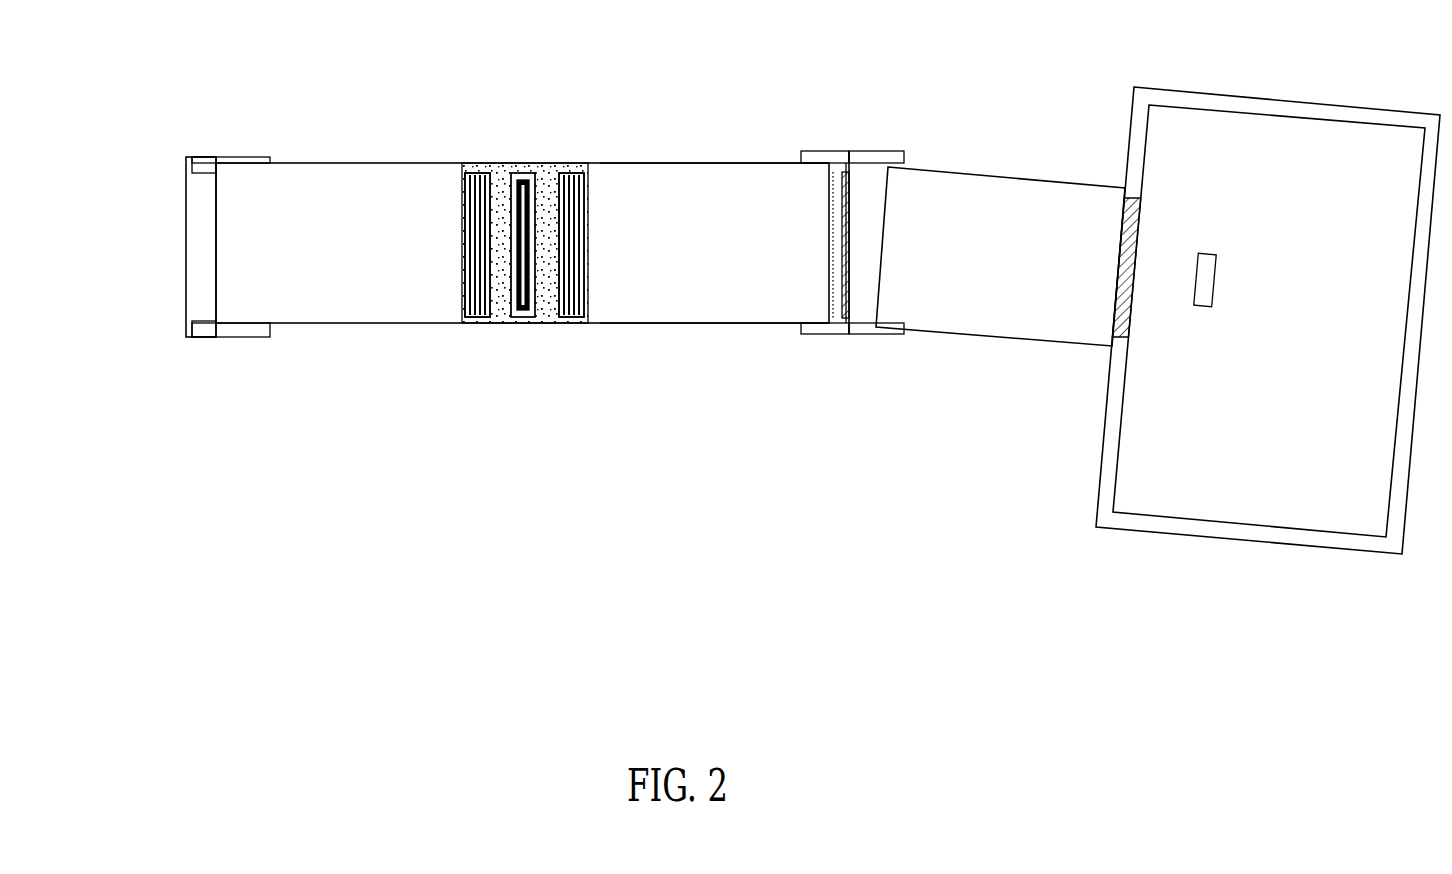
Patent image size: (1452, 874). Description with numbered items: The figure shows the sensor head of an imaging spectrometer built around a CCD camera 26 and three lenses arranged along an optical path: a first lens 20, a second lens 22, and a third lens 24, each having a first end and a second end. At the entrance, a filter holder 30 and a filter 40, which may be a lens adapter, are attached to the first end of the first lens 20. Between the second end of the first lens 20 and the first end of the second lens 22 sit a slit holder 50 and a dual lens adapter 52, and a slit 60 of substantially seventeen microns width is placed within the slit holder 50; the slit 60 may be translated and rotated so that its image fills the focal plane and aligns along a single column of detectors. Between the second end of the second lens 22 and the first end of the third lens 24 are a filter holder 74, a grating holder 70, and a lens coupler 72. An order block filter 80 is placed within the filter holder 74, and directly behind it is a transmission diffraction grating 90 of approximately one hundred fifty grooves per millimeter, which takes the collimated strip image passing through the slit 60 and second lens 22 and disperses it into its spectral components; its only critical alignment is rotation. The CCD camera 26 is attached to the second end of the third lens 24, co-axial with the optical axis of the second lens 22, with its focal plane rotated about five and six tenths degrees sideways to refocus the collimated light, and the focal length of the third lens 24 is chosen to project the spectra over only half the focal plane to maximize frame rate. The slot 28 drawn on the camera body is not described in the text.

The first lens 20 is at (302, 210).
The second lens 22 is at (648, 187).
The third lens 24 is at (988, 207).
The CCD camera 26 is at (1268, 140).
The slot 28 is at (1232, 255).
The filter holder 30 is at (183, 322).
The filter 40 is at (262, 339).
The slit holder 50 is at (507, 145).
The dual lens adapter 52 is at (482, 318).
The slit 60 is at (522, 320).
The grating holder 70 is at (838, 190).
The lens coupler 72 is at (875, 172).
The filter holder 74 is at (820, 147).
The order block filter 80 is at (832, 322).
The transmission diffraction grating 90 is at (845, 323).